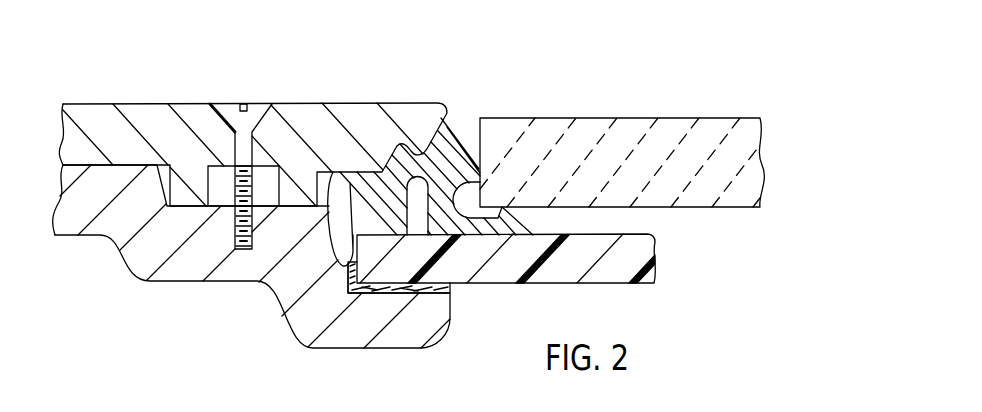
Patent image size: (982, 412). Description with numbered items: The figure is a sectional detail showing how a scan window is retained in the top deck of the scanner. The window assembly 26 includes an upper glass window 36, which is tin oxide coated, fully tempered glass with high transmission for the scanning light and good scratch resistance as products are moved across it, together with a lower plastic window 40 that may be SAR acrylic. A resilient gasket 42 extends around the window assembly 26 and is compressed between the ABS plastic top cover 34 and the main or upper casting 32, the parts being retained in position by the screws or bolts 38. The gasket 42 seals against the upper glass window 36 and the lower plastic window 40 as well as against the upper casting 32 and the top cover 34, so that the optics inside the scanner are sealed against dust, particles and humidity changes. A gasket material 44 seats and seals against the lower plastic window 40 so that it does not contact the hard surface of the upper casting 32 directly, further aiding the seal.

The window assembly 26 is at (532, 77).
The upper casting 32 is at (143, 270).
The top cover 34 is at (134, 104).
The upper glass window 36 is at (525, 118).
The screws or bolts 38 is at (260, 104).
The lower plastic window 40 is at (477, 283).
The resilient gasket 42 is at (338, 222).
The gasket material 44 is at (413, 291).